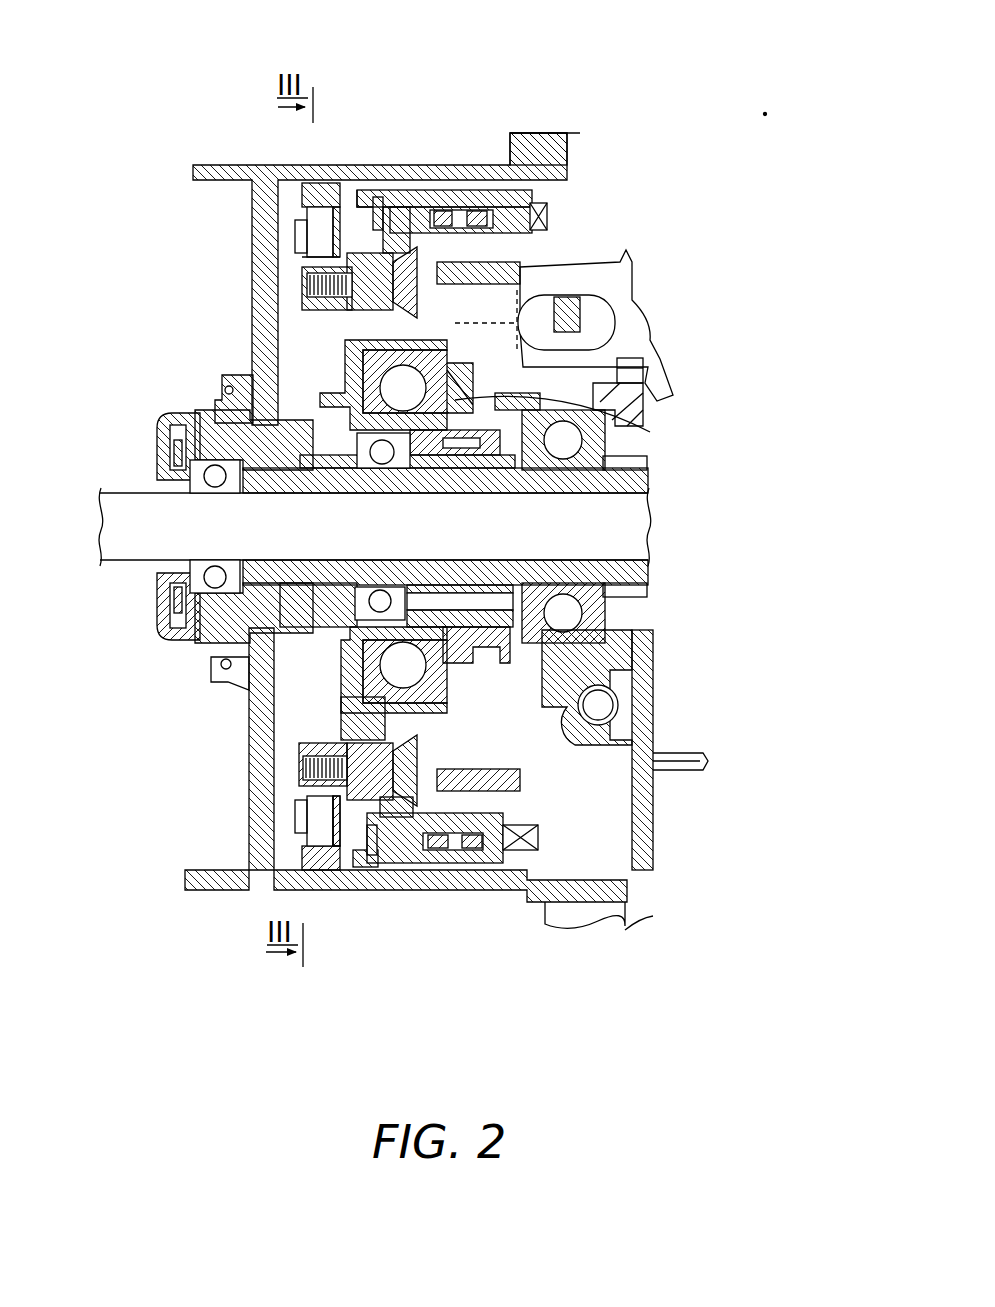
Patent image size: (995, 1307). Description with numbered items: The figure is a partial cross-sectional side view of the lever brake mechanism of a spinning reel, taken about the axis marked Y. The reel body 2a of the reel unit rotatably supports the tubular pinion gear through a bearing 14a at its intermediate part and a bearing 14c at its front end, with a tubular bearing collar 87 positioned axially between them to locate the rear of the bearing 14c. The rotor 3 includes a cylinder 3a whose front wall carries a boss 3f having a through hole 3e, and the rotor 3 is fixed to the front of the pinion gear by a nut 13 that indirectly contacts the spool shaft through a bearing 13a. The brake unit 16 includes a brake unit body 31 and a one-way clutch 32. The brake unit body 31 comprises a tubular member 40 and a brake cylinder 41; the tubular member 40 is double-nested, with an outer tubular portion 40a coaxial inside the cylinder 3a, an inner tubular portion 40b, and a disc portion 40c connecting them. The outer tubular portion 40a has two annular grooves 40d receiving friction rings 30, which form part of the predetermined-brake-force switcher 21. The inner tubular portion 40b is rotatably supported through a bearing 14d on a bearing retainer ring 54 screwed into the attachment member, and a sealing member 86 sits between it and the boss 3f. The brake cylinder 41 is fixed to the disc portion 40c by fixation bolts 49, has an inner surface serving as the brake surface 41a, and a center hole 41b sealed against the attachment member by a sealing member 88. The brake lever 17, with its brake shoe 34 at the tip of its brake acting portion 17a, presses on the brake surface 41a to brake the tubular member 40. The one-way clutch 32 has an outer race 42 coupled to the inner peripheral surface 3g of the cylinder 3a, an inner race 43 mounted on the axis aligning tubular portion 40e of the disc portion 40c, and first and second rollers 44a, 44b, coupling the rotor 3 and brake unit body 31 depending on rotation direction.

The reel body 2a is at (653, 815).
The rotor 3 is at (219, 908).
The cylinder 3a is at (495, 160).
The through hole 3e is at (333, 472).
The boss 3f is at (200, 400).
The inner peripheral surface 3g is at (253, 222).
The nut 13 is at (173, 650).
The bearing 13a is at (157, 580).
The bearing 14a is at (645, 604).
The bearing 14c is at (455, 680).
The bearing 14d is at (432, 730).
The brake unit 16 is at (410, 162).
The brake lever 17 is at (630, 291).
The lever pin 17a is at (603, 278).
The predetermined-brake-force switcher 21 is at (417, 870).
The friction rings 30 is at (455, 160).
The brake unit body 31 is at (367, 237).
The one-way clutch 32 is at (297, 793).
The brake shoe 34 is at (433, 162).
The tubular member 40 is at (377, 162).
The outer tubular portion 40a is at (440, 835).
The inner tubular portion 40b is at (385, 332).
The disc portion 40c is at (358, 822).
The annular grooves 40d is at (465, 835).
The axis aligning tubular portion 40e is at (313, 310).
The brake cylinder 41 is at (482, 147).
The brake surface 41a is at (490, 255).
The center hole 41b is at (482, 705).
The outer race 42 is at (313, 833).
The inner race 43 is at (297, 738).
The first rollers 44a is at (308, 833).
The second rollers 44b is at (336, 821).
The fixation bolts 49 is at (300, 757).
The bearing retainer ring 54 is at (620, 433).
The sealing member 86 is at (165, 445).
The bearing collar 87 is at (648, 468).
The sealing member 88 is at (625, 380).
The axis direction Y is at (765, 113).